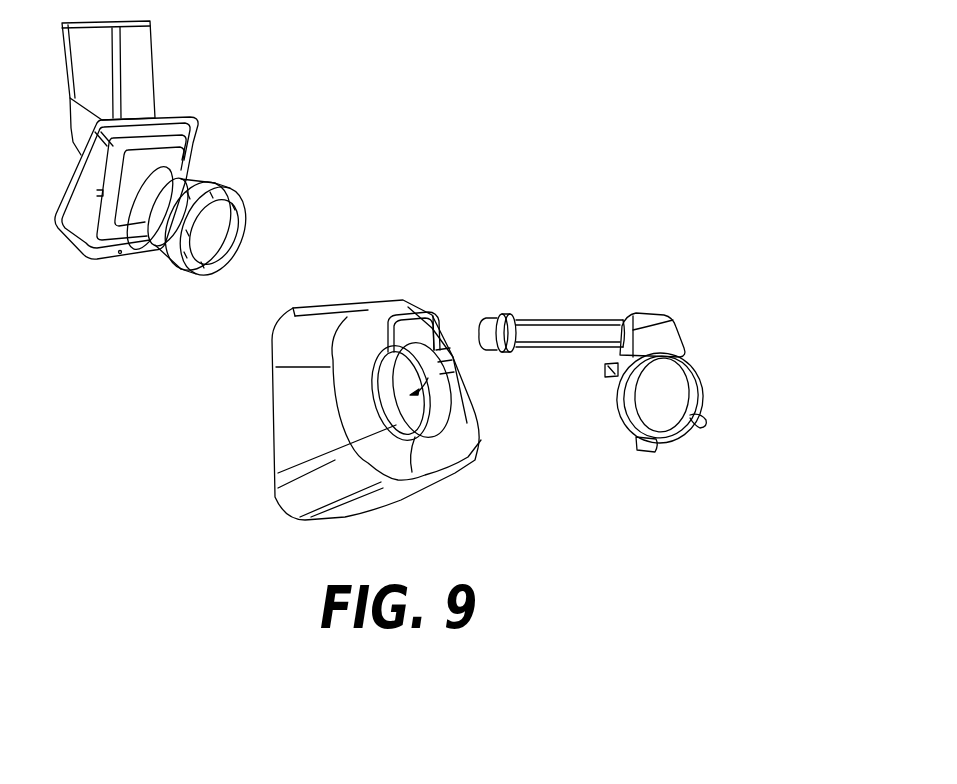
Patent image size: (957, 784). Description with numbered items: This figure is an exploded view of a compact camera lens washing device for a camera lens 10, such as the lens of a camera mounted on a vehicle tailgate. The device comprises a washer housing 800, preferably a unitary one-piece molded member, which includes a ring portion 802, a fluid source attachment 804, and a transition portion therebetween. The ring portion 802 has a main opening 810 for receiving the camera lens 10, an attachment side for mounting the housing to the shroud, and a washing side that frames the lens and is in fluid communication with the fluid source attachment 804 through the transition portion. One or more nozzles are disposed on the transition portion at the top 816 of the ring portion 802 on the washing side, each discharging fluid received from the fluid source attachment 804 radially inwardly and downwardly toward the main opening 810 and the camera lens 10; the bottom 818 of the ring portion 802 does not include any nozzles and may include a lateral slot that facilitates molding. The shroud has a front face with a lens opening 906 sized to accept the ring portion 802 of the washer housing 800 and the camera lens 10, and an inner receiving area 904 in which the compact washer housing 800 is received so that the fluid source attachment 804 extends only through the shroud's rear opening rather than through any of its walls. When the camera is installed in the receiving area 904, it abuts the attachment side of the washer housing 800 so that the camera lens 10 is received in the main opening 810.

The camera lens 10 is at (247, 200).
The fluid source attachment 804 is at (586, 320).
The washer housing 800 is at (683, 293).
The ring portion 802 is at (707, 423).
The main opening 810 is at (655, 393).
The top of ring portion 816 is at (687, 360).
The bottom of ring portion 818 is at (647, 447).
The inner receiving area 904 is at (455, 373).
The lens opening 906 is at (447, 430).